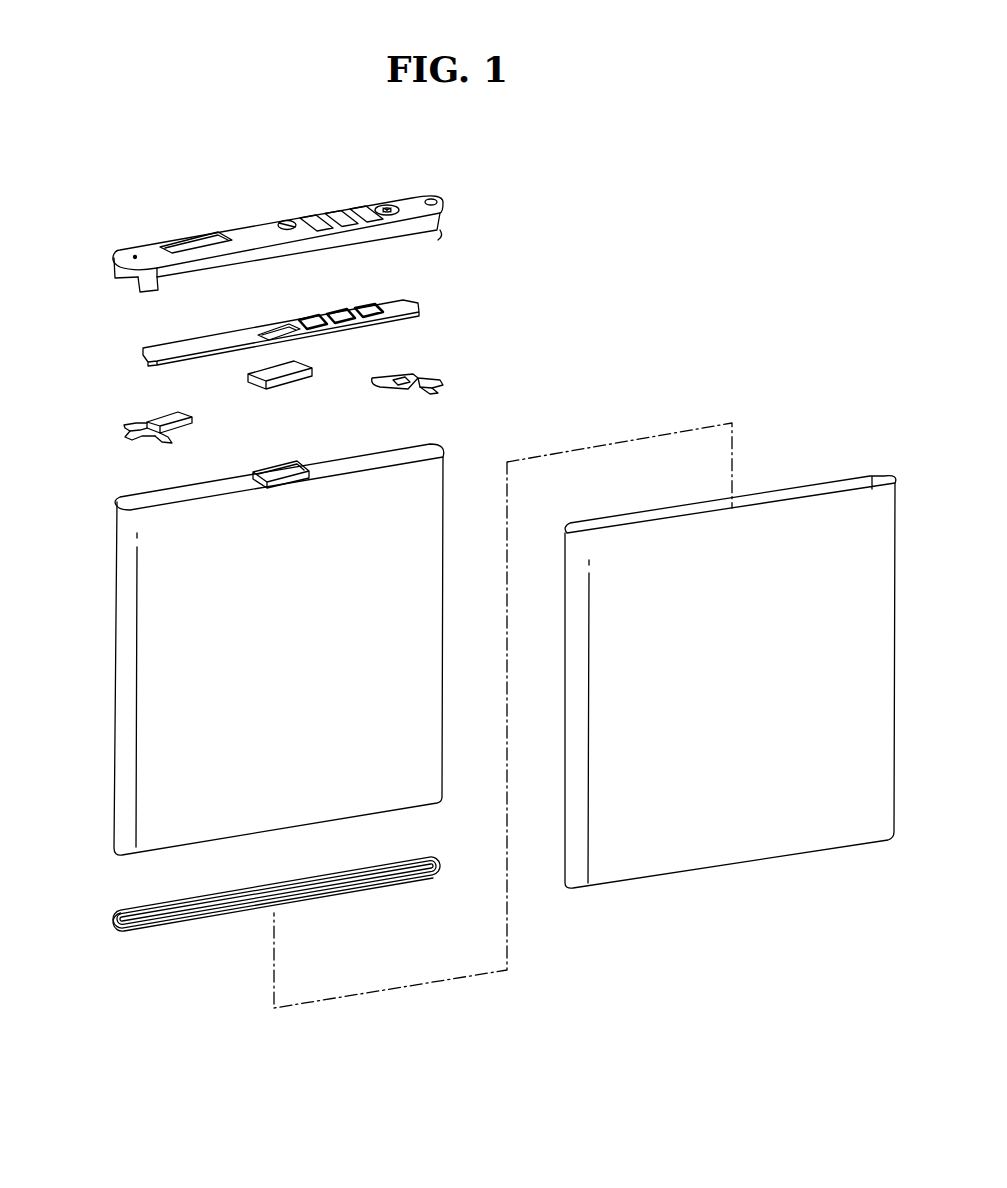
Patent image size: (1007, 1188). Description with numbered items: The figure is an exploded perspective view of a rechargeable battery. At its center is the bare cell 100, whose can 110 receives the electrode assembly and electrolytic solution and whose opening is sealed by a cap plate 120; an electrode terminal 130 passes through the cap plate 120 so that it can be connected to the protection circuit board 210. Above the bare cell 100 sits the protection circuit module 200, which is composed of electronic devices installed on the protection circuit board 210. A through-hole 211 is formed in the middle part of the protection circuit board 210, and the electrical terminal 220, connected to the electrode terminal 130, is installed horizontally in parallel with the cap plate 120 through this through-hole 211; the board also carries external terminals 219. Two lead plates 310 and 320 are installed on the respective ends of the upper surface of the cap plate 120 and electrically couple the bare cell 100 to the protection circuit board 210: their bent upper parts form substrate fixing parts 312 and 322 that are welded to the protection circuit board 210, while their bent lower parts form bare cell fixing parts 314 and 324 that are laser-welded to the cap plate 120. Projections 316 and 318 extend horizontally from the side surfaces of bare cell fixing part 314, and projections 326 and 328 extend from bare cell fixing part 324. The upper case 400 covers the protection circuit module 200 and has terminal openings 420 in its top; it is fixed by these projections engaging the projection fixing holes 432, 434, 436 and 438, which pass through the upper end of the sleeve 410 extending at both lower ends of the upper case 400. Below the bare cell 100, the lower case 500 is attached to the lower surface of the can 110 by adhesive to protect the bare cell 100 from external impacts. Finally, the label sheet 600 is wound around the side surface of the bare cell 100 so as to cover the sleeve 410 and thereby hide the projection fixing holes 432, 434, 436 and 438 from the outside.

The bare cell 100 is at (236, 640).
The can 110 is at (124, 728).
The cap plate 120 is at (118, 504).
The electrode terminal 130 is at (277, 470).
The protection circuit module 200 is at (241, 323).
The protection circuit board 210 is at (384, 303).
The through-hole 211 is at (277, 325).
The external terminals 219 is at (333, 317).
The electrical terminal 220 is at (298, 364).
The lead plate 310 is at (128, 427).
The substrate fixing part 312 is at (173, 412).
The bare cell fixing part 314 is at (127, 440).
The projection 316 is at (156, 446).
The projection 318 is at (123, 426).
The lead plate 320 is at (433, 379).
The substrate fixing part 322 is at (400, 387).
The bare cell fixing part 324 is at (440, 382).
The projection 326 is at (436, 394).
The projection 328 is at (400, 376).
The upper case 400 is at (267, 240).
The sleeve 410 is at (121, 282).
The terminal slots 420 is at (352, 207).
The projection fixing hole 432 is at (159, 284).
The projection fixing hole 434 is at (135, 255).
The projection fixing hole 436 is at (433, 228).
The projection fixing hole 438 is at (406, 207).
The lower case 500 is at (113, 921).
The label sheet 600 is at (727, 853).